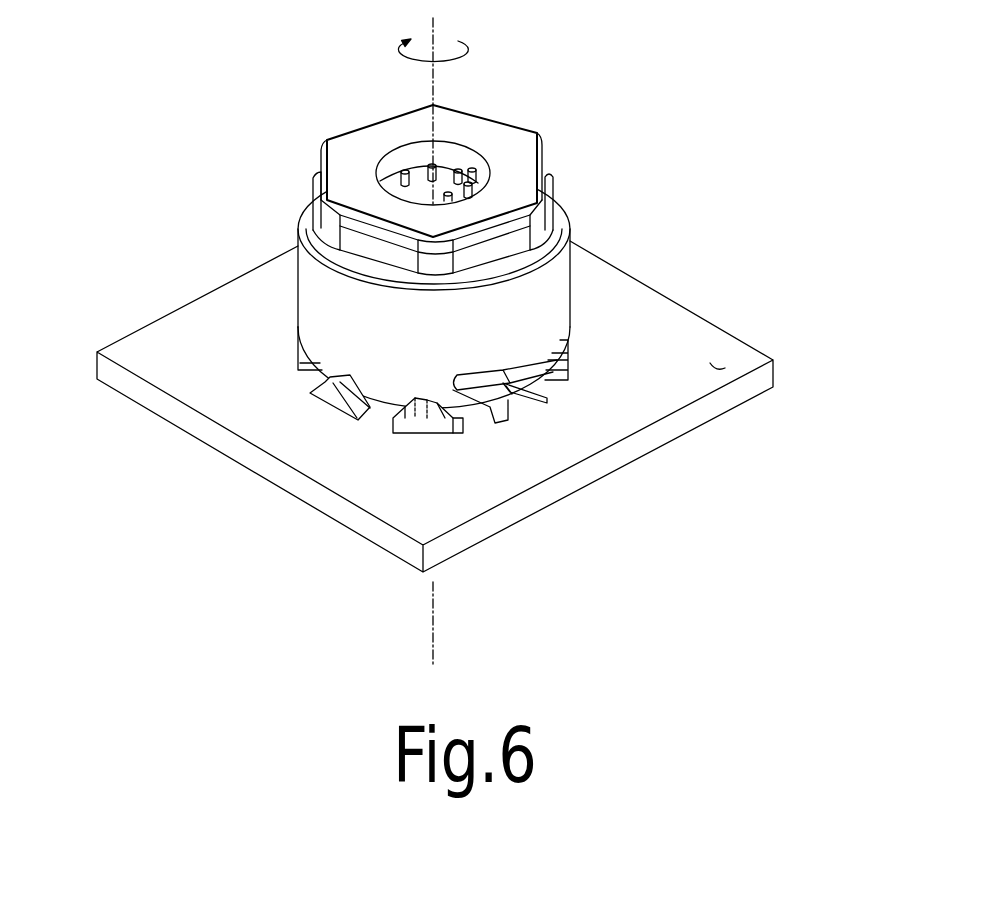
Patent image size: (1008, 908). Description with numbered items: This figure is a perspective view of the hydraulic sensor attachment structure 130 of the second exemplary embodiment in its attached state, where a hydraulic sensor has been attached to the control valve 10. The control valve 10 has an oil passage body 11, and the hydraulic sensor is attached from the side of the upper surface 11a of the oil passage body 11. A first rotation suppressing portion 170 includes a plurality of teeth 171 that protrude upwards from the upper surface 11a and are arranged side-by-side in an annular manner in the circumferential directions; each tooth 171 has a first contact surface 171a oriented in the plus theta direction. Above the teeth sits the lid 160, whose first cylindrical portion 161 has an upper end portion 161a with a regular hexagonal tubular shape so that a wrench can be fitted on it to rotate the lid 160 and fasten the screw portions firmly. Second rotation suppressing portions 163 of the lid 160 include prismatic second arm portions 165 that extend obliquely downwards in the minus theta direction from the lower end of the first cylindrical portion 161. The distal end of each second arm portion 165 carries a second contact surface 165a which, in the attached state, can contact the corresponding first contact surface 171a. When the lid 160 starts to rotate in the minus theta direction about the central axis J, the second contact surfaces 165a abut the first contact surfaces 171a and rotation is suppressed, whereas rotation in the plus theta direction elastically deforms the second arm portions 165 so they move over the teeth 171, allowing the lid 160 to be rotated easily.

The control valve 10 is at (449, 393).
The oil passage body 11 is at (140, 357).
The upper surface 11a is at (722, 368).
The hydraulic sensor attachment structure 130 is at (542, 330).
The lid 160 is at (485, 166).
The first cylindrical portion 161 is at (540, 293).
The upper end portion 161a is at (480, 133).
The second rotation suppressing portion 163 is at (467, 424).
The second arm portion 165 is at (493, 418).
The second contact surface 165a is at (520, 413).
The first rotation suppressing portion 170 is at (397, 445).
The tooth 171 is at (513, 405).
The first contact surface 171a is at (550, 367).
The central axis J is at (433, 38).